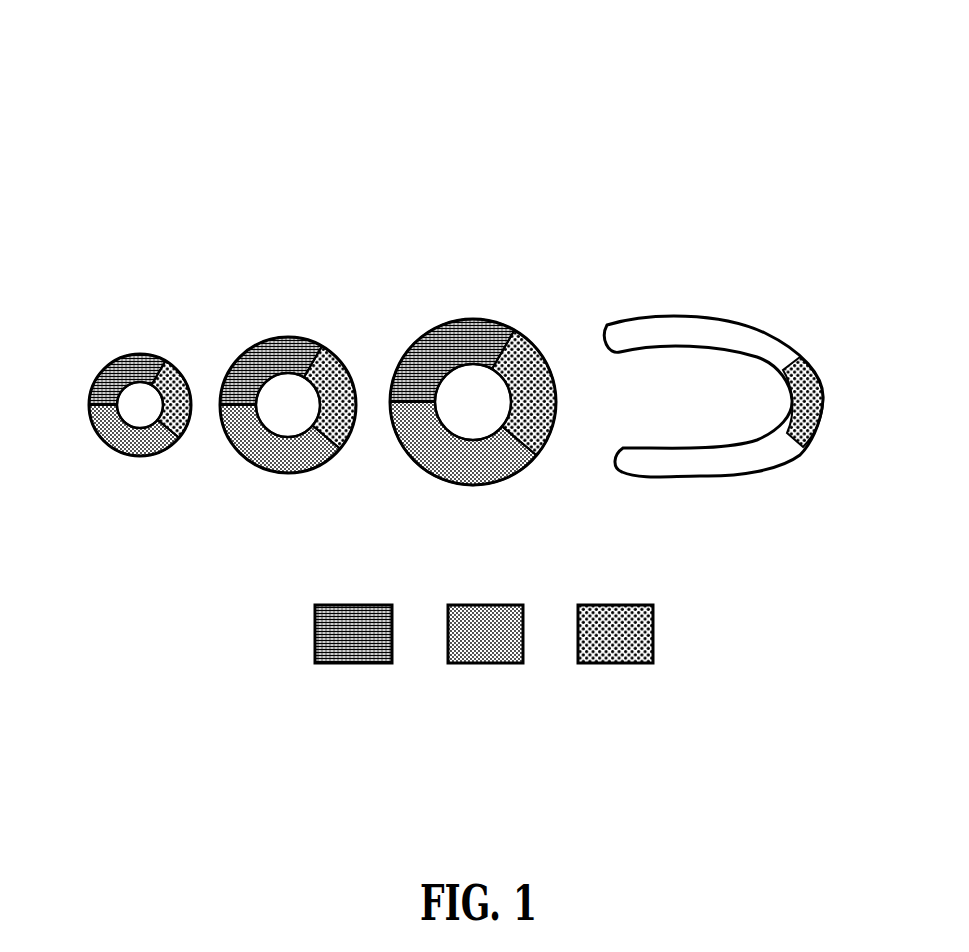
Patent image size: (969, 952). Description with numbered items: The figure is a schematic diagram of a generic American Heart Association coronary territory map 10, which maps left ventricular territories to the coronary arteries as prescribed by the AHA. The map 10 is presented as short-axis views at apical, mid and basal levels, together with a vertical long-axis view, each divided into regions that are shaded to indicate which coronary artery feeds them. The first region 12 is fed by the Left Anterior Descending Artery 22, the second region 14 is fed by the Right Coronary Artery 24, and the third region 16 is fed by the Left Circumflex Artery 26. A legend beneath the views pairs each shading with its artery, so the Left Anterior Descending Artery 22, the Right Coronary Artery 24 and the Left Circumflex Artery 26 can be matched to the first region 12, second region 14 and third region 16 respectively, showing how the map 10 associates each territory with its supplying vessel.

The coronary territory map 10 is at (489, 108).
The first region 12 is at (103, 368).
The second region 14 is at (112, 443).
The third region 16 is at (180, 370).
The Left Anterior Descending Artery 22 is at (357, 605).
The Right Coronary Artery 24 is at (492, 605).
The Left Circumflex Artery 26 is at (622, 605).